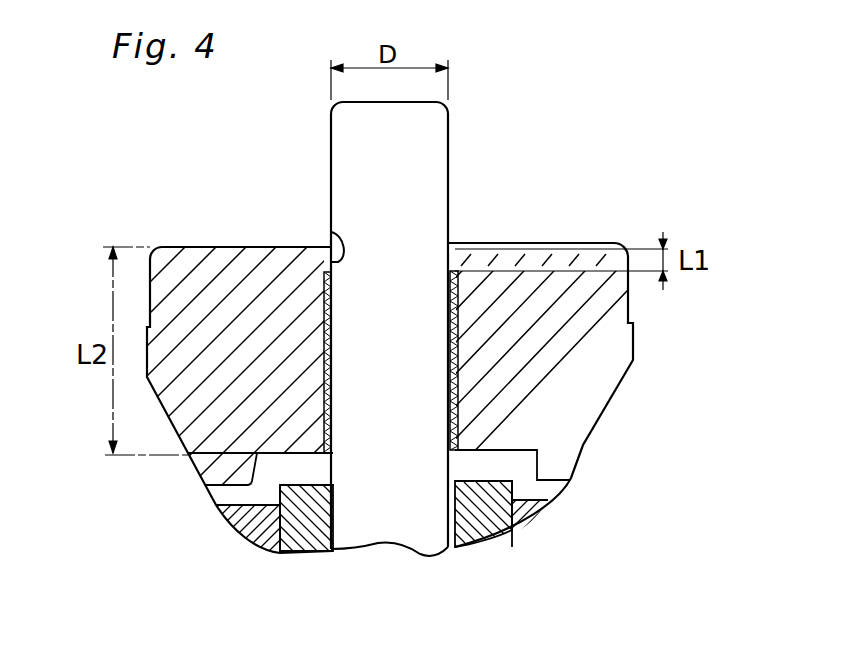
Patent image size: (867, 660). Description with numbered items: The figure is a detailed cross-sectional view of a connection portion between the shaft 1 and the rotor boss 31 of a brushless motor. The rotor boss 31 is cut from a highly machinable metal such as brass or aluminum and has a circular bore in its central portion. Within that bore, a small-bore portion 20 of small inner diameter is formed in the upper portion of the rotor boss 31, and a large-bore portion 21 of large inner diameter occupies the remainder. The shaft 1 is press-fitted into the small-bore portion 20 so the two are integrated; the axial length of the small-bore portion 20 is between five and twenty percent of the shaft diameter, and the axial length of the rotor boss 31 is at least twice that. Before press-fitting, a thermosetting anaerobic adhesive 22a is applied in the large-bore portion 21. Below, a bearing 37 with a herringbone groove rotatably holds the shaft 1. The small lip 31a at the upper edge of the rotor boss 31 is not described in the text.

The shaft 1 is at (434, 158).
The rotor boss 31 is at (220, 278).
The lip 31a is at (340, 248).
The small-bore portion 20 is at (328, 265).
The large-bore portion 21 is at (458, 357).
The adhesive 22a is at (330, 458).
The bearing 37 is at (490, 528).